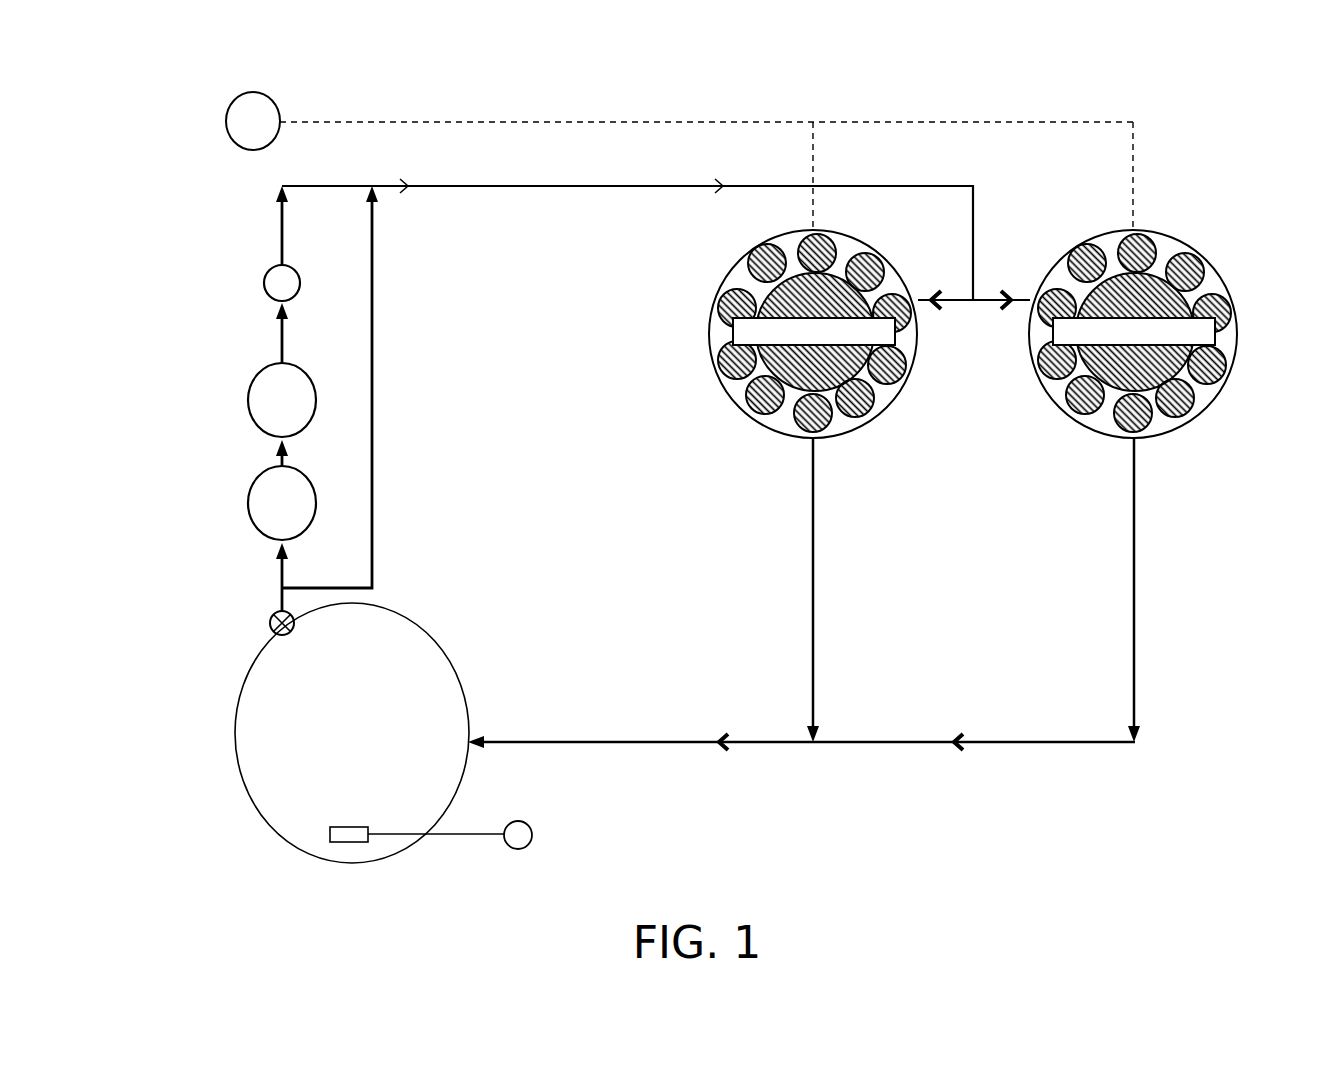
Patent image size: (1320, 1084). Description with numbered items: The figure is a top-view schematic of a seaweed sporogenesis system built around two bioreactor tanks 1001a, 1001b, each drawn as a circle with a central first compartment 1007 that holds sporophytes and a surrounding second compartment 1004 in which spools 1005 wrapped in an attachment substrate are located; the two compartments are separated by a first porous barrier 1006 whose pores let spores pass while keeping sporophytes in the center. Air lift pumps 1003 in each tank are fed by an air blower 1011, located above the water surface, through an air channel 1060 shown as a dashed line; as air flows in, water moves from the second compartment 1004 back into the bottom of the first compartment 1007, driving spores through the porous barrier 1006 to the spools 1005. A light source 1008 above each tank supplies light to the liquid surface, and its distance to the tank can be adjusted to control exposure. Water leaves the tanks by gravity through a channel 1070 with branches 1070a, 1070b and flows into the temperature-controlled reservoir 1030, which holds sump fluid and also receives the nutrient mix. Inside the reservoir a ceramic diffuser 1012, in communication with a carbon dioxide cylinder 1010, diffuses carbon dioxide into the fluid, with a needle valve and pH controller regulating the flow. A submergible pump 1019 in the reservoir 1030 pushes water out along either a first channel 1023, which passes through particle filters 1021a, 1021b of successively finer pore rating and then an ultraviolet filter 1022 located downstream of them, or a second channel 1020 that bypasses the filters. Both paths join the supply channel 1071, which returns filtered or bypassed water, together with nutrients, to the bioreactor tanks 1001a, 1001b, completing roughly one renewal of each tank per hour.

The bioreactor tank 1001a is at (783, 334).
The bioreactor tank 1001b is at (1127, 349).
The air lift pump 1003 is at (1050, 357).
The second compartment 1004 is at (882, 396).
The spools 1005 is at (1178, 270).
The first porous barrier 1006 is at (1195, 382).
The first compartment 1007 is at (1153, 367).
The light source 1008 is at (1060, 332).
The carbon dioxide cylinder 1010 is at (518, 849).
The air blower 1011 is at (253, 92).
The ceramic diffuser 1012 is at (349, 842).
The submergible pump 1019 is at (270, 626).
The second channel 1020 is at (372, 417).
The particle filter 1021a is at (247, 538).
The particle filter 1021b is at (246, 414).
The ultraviolet filter 1022 is at (250, 314).
The first channel 1023 is at (282, 235).
The reservoir 1030 is at (248, 760).
The air channel 1060 is at (1133, 122).
The channel 1070 is at (888, 742).
The channel 1070a is at (813, 577).
The channel 1070b is at (1134, 590).
The channel 1071 is at (532, 186).